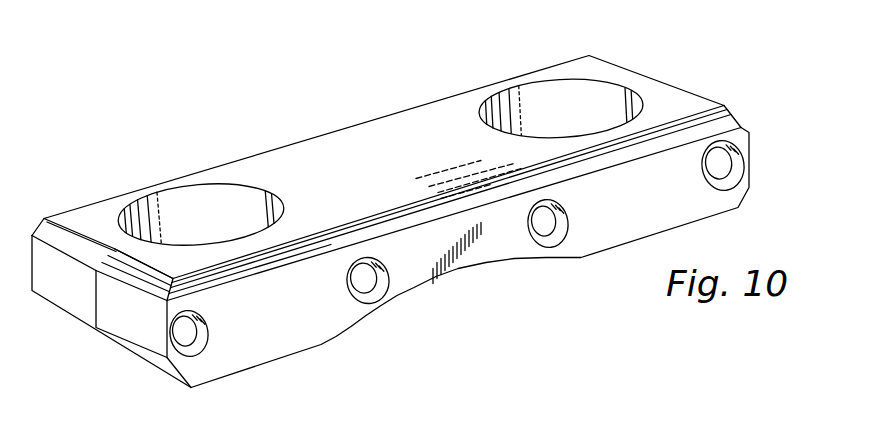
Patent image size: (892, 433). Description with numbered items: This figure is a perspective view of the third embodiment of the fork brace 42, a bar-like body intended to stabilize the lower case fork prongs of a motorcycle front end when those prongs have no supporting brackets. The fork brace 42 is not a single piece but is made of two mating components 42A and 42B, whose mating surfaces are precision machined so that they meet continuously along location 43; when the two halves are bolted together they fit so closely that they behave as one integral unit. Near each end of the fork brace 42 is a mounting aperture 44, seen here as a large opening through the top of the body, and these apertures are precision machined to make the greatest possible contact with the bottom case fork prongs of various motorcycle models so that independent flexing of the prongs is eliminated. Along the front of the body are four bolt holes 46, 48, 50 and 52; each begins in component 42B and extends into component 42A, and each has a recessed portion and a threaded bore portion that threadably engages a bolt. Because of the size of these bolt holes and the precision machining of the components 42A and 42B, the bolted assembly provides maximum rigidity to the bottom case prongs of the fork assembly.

The fork brace 42 is at (622, 77).
The mating component 42A is at (623, 78).
The mating component 42B is at (680, 102).
The mating location 43 is at (398, 162).
The mounting aperture 44 is at (525, 98).
The bolt hole 46 is at (733, 170).
The bolt hole 48 is at (550, 233).
The bolt hole 50 is at (373, 290).
The bolt hole 52 is at (200, 347).